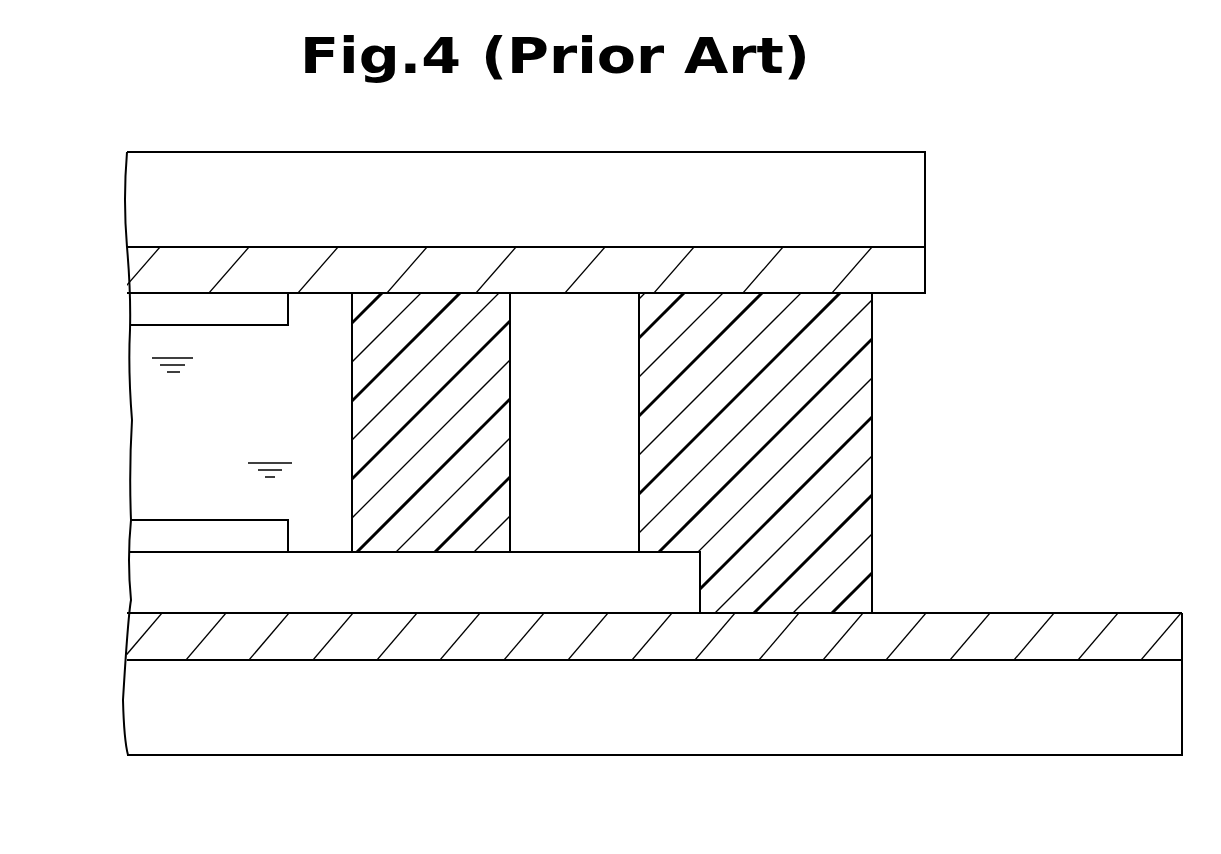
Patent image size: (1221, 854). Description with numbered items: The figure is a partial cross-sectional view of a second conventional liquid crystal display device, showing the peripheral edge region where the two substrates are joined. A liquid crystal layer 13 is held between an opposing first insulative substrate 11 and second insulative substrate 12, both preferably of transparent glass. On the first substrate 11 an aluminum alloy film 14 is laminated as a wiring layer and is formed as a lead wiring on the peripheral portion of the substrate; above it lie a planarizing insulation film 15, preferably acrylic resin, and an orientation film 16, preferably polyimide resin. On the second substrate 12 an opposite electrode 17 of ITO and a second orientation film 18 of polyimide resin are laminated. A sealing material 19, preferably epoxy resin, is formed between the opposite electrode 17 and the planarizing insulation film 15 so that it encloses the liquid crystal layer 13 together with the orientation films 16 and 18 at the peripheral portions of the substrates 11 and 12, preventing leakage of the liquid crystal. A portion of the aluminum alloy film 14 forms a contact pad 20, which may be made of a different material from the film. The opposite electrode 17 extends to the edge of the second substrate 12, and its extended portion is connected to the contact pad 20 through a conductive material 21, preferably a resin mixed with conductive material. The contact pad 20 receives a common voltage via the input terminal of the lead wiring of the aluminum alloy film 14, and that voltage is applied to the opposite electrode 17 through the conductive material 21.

The first insulative substrate 11 is at (863, 750).
The second insulative substrate 12 is at (925, 192).
The liquid crystal layer 13 is at (137, 412).
The aluminum alloy film 14 is at (607, 655).
The planarizing insulation film 15 is at (137, 582).
The orientation film 16 is at (137, 532).
The opposite electrode 17 is at (146, 265).
The second orientation film 18 is at (135, 305).
The sealing material 19 is at (352, 383).
The contact pad 20 is at (785, 650).
The conductive material 21 is at (872, 363).